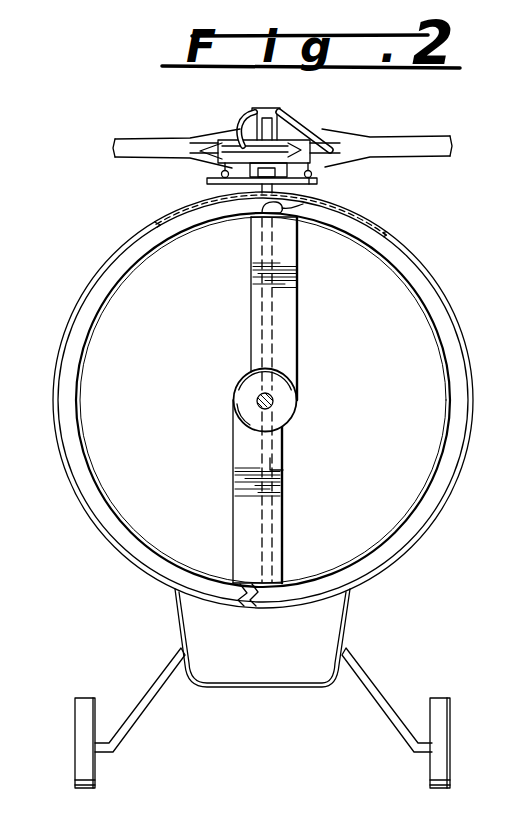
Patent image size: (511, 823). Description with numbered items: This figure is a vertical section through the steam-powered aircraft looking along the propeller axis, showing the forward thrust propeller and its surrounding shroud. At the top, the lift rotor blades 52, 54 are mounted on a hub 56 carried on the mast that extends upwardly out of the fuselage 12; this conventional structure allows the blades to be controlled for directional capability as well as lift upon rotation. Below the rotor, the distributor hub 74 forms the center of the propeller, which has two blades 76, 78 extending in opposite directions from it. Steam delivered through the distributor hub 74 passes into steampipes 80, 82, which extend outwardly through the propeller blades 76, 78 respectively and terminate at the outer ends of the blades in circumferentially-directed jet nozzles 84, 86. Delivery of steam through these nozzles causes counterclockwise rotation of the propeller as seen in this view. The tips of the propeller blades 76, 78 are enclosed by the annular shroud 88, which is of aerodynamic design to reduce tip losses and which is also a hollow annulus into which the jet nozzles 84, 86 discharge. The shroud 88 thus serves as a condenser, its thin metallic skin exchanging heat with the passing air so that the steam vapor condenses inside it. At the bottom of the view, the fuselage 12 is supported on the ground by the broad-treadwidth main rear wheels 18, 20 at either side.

The fuselage 12 is at (318, 686).
The main rear wheel 18 is at (98, 772).
The main rear wheel 20 is at (257, 225).
The lift rotor blade 52 is at (144, 143).
The lift rotor blade 54 is at (425, 140).
The hub 56 is at (327, 138).
The distributor hub 74 is at (288, 398).
The propeller blade 76 is at (296, 307).
The propeller blade 78 is at (278, 530).
The steampipe 80 is at (268, 333).
The steampipe 82 is at (284, 466).
The jet nozzle 84 is at (303, 204).
The jet nozzle 86 is at (241, 609).
The annular shroud 88 is at (420, 267).